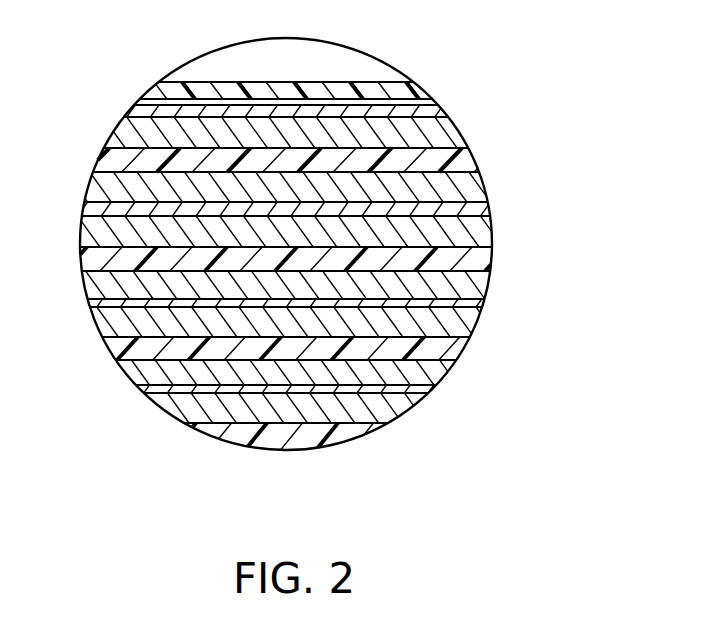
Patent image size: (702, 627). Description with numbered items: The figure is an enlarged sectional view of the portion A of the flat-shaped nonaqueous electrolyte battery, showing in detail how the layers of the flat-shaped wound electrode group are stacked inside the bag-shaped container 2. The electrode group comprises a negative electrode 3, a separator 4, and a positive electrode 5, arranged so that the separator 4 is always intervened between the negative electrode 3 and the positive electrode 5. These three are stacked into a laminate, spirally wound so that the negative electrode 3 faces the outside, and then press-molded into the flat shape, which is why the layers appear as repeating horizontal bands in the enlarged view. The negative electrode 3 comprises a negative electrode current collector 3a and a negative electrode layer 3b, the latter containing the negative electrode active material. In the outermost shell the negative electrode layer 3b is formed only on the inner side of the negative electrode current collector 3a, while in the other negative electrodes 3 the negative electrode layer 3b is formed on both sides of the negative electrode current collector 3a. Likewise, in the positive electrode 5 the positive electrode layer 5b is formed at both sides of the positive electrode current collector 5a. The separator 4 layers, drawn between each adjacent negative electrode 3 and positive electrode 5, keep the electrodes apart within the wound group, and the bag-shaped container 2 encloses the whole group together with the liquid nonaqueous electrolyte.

The portion A is at (188, 72).
The bag-shaped container 2 is at (413, 90).
The negative electrode 3 is at (345, 219).
The negative electrode current collector 3a is at (433, 112).
The negative electrode layer 3b is at (442, 130).
The separator 4 is at (105, 160).
The positive electrode 5 is at (342, 316).
The positive electrode current collector 5a is at (475, 208).
The positive electrode layer 5b is at (467, 180).